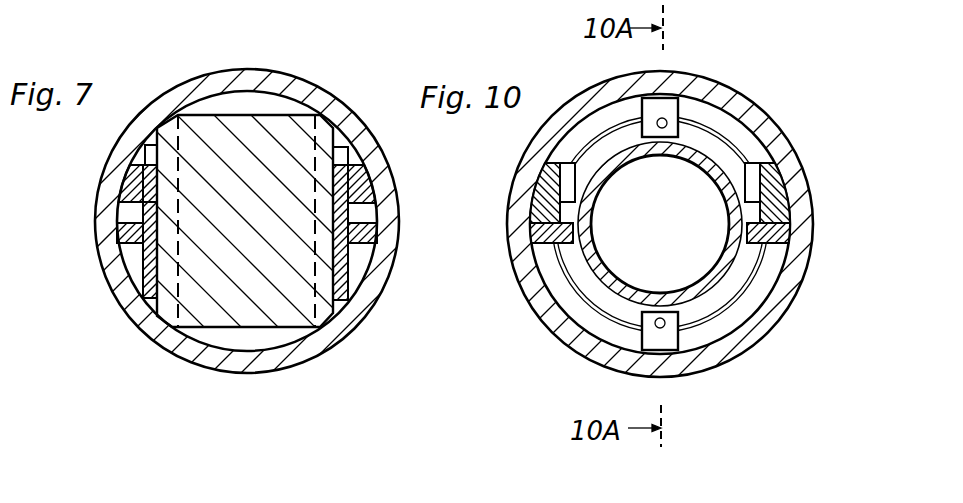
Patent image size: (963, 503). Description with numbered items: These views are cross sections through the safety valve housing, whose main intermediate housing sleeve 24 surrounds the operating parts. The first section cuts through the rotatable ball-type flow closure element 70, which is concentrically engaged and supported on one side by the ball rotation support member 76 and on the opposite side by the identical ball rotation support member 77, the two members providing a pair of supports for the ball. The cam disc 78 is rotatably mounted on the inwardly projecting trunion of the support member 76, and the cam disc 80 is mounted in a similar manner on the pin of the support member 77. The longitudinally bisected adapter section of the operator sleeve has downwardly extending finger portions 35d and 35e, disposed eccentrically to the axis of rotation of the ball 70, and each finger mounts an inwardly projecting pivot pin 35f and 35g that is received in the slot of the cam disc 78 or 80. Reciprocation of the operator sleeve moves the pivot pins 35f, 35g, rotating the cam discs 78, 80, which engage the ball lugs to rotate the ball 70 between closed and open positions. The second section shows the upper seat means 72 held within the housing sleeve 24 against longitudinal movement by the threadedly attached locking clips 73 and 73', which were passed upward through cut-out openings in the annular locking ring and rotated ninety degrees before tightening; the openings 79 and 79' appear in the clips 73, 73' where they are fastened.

In FIG. 7, the intermediate housing sleeve 24 is at (132, 308).
In FIG. 10, the intermediate housing sleeve 24 is at (555, 322).
In FIG. 7, the flow closure element 70 is at (270, 320).
In FIG. 7, the finger portion 35d is at (130, 178).
In FIG. 10, the finger portion 35d is at (542, 193).
In FIG. 7, the pivot pin 35f is at (122, 192).
In FIG. 7, the pivot pin 35g is at (362, 185).
In FIG. 7, the finger portion 35e is at (355, 190).
In FIG. 10, the finger portion 35e is at (793, 196).
In FIG. 7, the ball rotation support member 76 is at (125, 233).
In FIG. 10, the ball rotation support member 76 is at (530, 233).
In FIG. 7, the ball rotation support member 77 is at (372, 233).
In FIG. 10, the ball rotation support member 77 is at (795, 234).
In FIG. 7, the cam disc 78 is at (145, 268).
In FIG. 7, the cam disc 80 is at (350, 268).
In FIG. 10, the upper seat means 72 is at (618, 162).
In FIG. 10, the locking clip 73 is at (690, 89).
In FIG. 10, the locking clip 73' is at (620, 353).
In FIG. 10, the pin hole 79 is at (636, 86).
In FIG. 10, the pin hole 79' is at (656, 285).